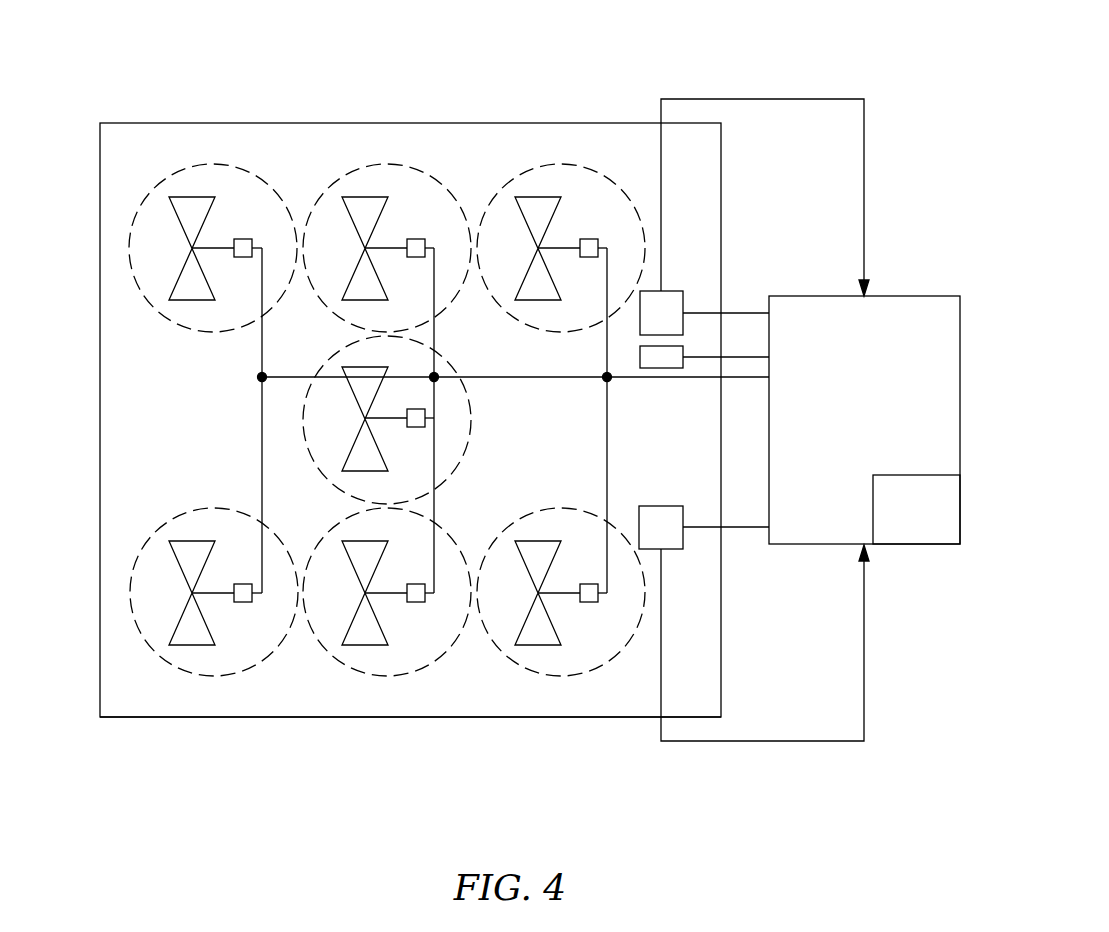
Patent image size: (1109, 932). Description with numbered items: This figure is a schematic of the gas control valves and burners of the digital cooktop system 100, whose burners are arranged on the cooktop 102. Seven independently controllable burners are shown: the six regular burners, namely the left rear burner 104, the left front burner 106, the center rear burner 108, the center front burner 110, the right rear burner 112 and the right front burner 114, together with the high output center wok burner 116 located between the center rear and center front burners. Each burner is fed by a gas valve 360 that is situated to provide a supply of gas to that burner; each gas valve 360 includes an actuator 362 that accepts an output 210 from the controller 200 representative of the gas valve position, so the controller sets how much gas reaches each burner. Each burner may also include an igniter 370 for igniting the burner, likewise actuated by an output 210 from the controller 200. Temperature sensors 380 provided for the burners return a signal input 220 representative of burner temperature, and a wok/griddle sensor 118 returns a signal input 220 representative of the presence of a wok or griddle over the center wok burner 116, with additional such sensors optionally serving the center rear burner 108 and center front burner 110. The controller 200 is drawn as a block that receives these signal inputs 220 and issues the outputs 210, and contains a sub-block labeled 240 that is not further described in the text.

The digital cooktop system 100 is at (438, 122).
The cooktop 102 is at (259, 700).
The left rear burner 104 is at (143, 202).
The left front burner 106 is at (143, 547).
The center rear burner 108 is at (372, 163).
The center front burner 110 is at (391, 675).
The right rear burner 112 is at (555, 163).
The right front burner 114 is at (562, 677).
The center wok burner 116 is at (283, 463).
The wok/griddle sensor 118 is at (665, 290).
The controller 200 is at (863, 293).
The output 210 is at (735, 313).
The signal input 220 is at (798, 98).
The memory module 240 is at (898, 526).
The gas valve 360 is at (193, 197).
The actuator 362 is at (243, 240).
The igniter 370 is at (630, 350).
The temperature sensor 380 is at (668, 550).